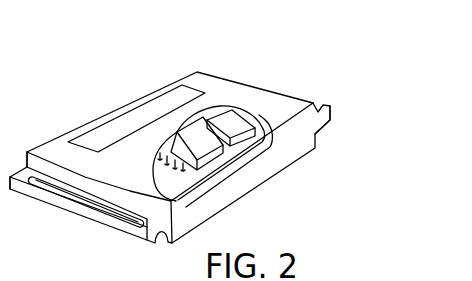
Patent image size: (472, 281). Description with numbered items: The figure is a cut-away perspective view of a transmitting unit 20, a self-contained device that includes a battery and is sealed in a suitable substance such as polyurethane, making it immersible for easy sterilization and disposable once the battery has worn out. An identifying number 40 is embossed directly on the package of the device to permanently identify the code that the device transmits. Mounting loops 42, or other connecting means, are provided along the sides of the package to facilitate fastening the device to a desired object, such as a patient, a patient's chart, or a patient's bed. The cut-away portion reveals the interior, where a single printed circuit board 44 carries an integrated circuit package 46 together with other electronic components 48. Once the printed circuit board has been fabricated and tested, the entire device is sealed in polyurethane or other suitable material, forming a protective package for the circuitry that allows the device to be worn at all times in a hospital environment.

The transmitting unit 20 is at (333, 81).
The identifying number 40 is at (112, 124).
The mounting loops 42 is at (140, 232).
The printed circuit board 44 is at (262, 146).
The integrated circuit package 46 is at (188, 147).
The electronic components 48 is at (244, 127).